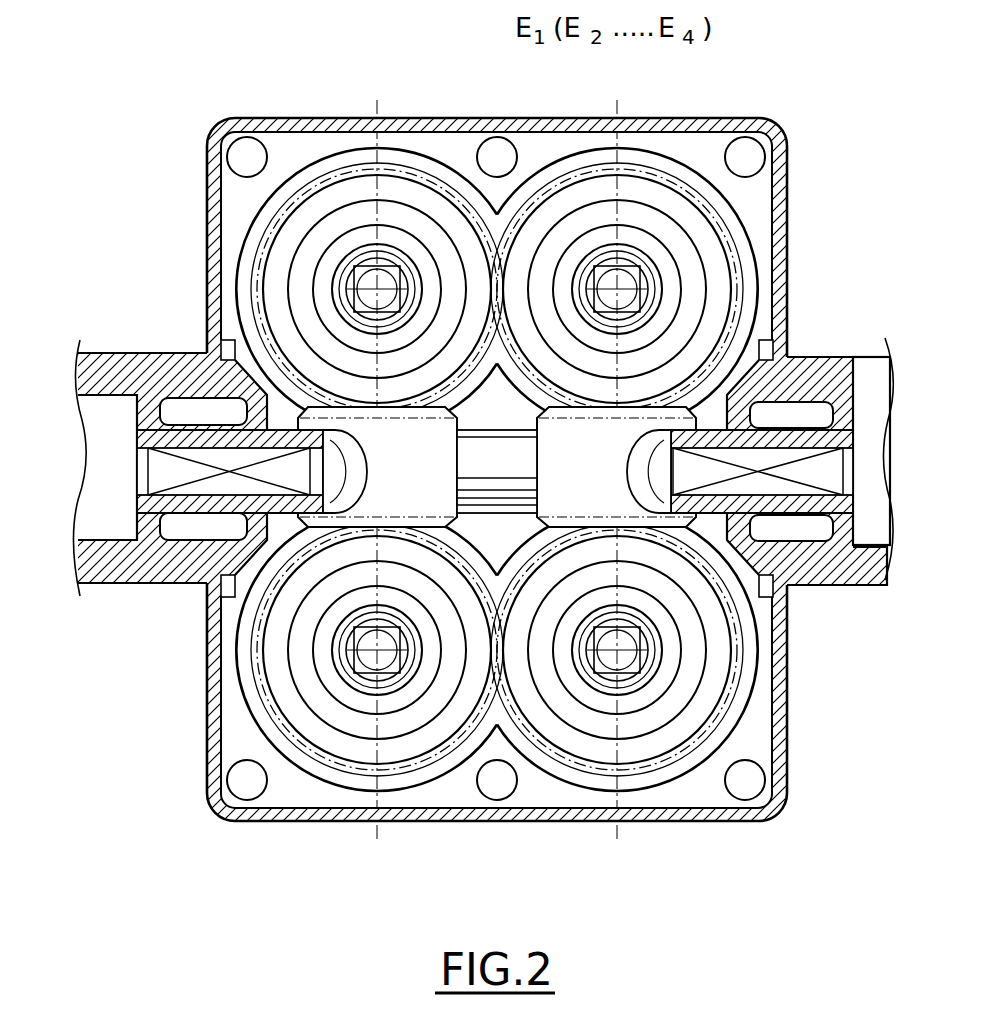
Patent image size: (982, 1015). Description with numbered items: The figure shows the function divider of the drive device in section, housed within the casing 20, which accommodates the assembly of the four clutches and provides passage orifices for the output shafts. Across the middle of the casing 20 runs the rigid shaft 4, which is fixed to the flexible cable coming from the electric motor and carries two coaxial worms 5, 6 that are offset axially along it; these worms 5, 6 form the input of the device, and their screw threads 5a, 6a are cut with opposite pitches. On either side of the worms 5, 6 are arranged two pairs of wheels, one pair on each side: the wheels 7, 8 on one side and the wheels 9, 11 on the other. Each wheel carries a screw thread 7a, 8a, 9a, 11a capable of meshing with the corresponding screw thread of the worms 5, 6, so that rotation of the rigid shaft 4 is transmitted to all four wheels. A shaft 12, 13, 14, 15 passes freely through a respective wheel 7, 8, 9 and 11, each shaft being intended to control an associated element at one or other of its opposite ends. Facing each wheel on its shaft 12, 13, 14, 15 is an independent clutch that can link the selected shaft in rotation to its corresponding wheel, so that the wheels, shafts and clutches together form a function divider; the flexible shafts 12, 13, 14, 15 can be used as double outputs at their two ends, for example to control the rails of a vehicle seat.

The rigid shaft 4 is at (840, 423).
The worm 5 is at (390, 502).
The screw thread 5a is at (250, 577).
The worm 6 is at (573, 480).
The screw thread 6a is at (745, 362).
The wheel 7 is at (277, 243).
The screw thread 7a is at (433, 188).
The wheel 8 is at (285, 692).
The screw thread 8a is at (318, 757).
The wheel 9 is at (715, 263).
The screw thread 9a is at (687, 200).
The wheel 11 is at (697, 642).
The screw thread 11a is at (660, 763).
The shaft 12 is at (380, 283).
The shaft 13 is at (347, 645).
The shaft 14 is at (612, 287).
The shaft 15 is at (640, 663).
The casing 20 is at (780, 202).